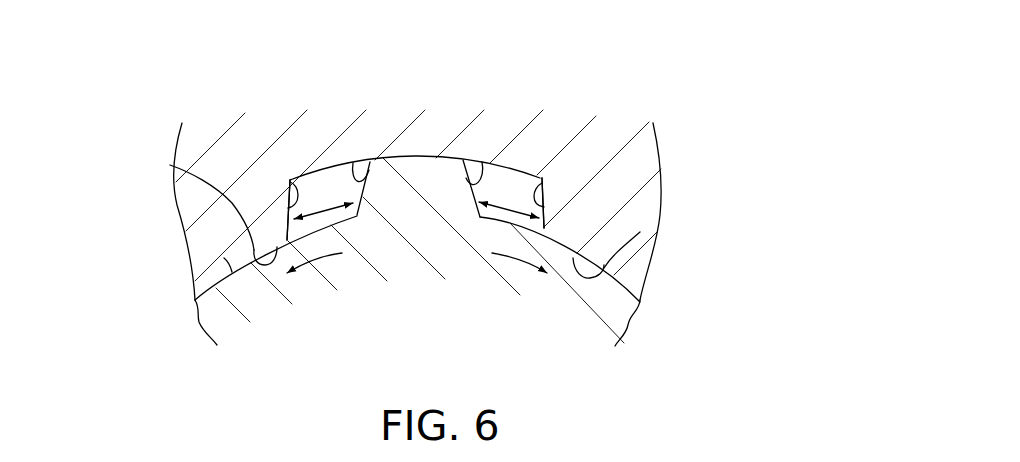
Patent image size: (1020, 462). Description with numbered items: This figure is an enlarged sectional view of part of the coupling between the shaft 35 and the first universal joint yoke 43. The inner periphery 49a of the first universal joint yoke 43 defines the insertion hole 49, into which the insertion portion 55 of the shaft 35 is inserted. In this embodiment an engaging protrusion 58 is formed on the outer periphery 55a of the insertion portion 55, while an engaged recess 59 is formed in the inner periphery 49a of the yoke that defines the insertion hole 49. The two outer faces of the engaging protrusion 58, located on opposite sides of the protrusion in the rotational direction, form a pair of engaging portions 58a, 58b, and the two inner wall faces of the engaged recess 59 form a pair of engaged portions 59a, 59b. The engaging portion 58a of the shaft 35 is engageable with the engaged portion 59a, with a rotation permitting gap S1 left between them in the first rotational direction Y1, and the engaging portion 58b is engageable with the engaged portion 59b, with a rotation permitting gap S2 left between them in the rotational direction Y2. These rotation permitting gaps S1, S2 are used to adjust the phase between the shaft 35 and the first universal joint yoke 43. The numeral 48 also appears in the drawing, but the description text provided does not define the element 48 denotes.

The first universal joint yoke 43 is at (658, 141).
The core piece 48 is at (637, 179).
The insertion hole 49 is at (705, 229).
The inner periphery 49a is at (170, 165).
The shaft 35 is at (624, 283).
The insertion portion 55 is at (223, 310).
The outer periphery 55a is at (224, 258).
The engaging protrusion 58 is at (416, 174).
The engaging portion 58a is at (353, 163).
The engaging portion 58b is at (482, 162).
The engaged recess 59 is at (337, 183).
The engaged portion 59a is at (290, 180).
The engaged portion 59b is at (540, 178).
The rotation permitting gap S1 is at (313, 213).
The rotation permitting gap S2 is at (508, 208).
The first rotational direction Y1 is at (320, 258).
The first rotational direction Y2 is at (506, 258).